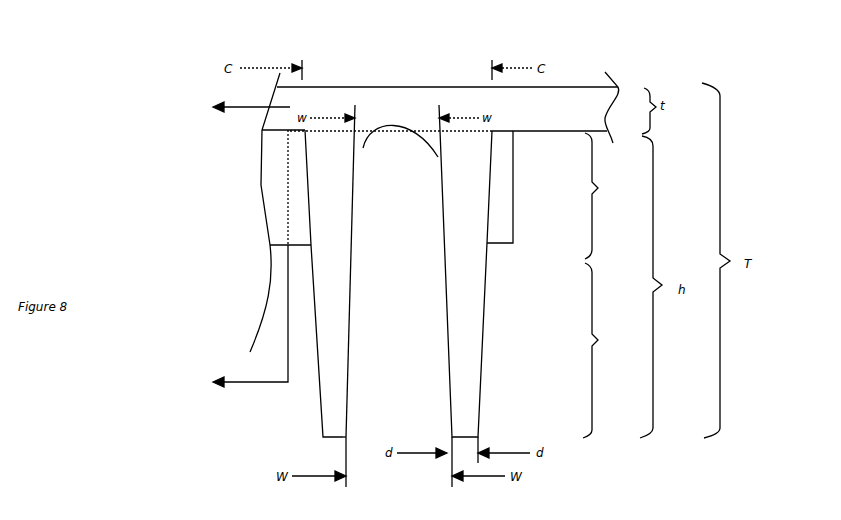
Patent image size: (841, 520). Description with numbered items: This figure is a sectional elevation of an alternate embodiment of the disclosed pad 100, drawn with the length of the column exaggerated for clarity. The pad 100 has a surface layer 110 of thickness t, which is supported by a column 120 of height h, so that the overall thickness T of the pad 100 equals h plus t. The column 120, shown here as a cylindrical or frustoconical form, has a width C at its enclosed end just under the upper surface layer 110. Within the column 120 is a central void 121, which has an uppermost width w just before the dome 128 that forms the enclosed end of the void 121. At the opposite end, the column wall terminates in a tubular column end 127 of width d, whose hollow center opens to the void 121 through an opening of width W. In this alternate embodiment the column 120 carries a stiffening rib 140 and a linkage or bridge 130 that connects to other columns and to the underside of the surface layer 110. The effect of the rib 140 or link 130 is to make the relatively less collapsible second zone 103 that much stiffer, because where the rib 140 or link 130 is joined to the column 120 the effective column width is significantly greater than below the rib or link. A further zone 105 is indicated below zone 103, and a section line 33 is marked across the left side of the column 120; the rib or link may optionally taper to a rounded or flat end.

The pad 100 is at (403, 228).
The surface layer 110 is at (391, 103).
The column 120 is at (298, 272).
The central void 121 is at (380, 183).
The column end 127 is at (348, 440).
The dome 128 is at (393, 131).
The linkage or bridge 130 is at (275, 202).
The stiffening rib 140 is at (498, 228).
The second zone 103 is at (607, 196).
The lower portion 105 is at (606, 350).
The section line 33- 33 is at (238, 245).